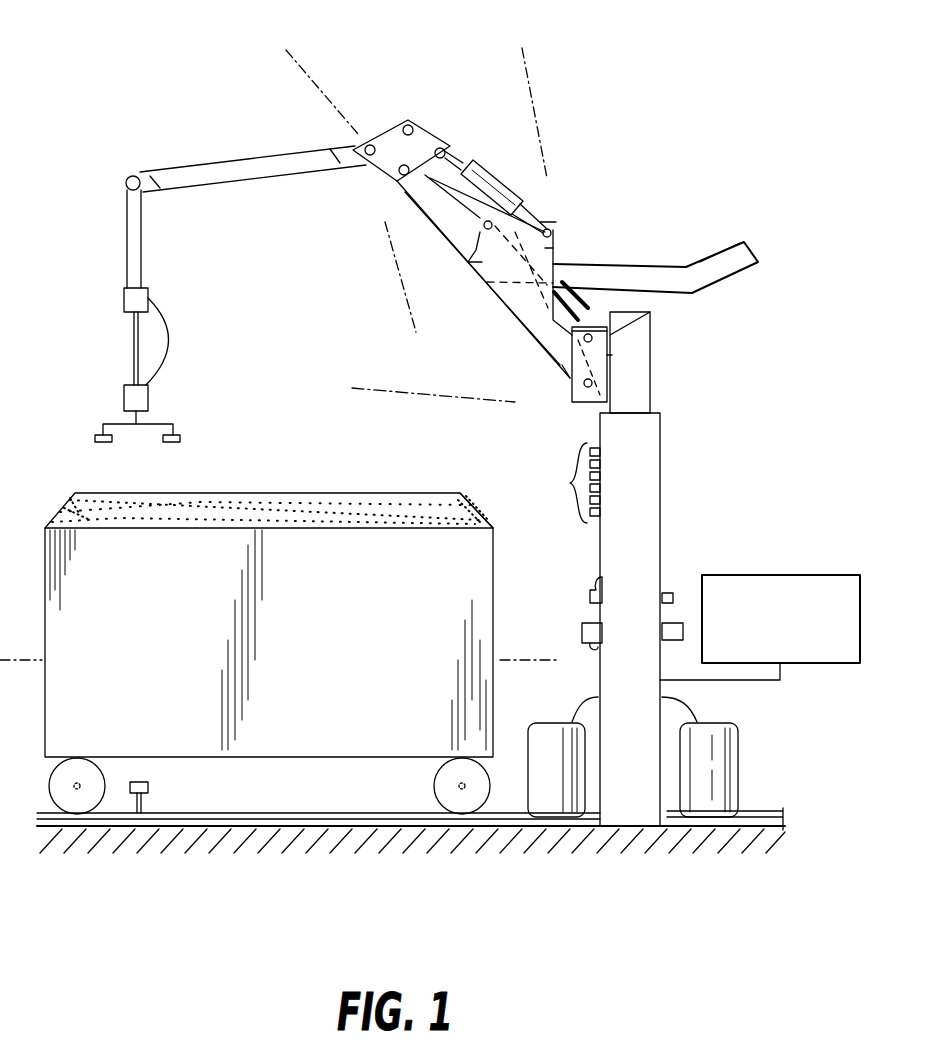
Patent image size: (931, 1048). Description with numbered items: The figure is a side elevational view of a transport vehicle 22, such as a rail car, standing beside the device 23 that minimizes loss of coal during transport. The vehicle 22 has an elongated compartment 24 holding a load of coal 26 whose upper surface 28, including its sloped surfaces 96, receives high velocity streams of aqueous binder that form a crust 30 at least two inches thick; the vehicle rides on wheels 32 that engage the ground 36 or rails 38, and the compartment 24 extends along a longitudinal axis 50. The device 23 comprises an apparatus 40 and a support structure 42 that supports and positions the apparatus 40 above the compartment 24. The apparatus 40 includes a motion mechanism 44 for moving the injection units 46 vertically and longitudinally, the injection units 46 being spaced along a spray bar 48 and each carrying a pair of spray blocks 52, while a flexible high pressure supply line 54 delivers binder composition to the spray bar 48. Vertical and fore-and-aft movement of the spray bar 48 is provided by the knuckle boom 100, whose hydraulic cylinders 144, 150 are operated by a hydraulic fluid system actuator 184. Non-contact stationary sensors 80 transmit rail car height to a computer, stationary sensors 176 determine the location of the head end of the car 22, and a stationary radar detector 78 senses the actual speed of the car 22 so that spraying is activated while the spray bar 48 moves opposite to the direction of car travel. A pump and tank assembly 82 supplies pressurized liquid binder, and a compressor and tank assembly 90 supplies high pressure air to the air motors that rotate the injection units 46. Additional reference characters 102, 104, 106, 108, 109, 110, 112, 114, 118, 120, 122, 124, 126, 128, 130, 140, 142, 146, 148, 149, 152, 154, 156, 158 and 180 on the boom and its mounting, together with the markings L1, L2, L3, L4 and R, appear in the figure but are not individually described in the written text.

The transport vehicle 22 is at (299, 662).
The device 23 is at (270, 126).
The elongated compartment 24 is at (342, 612).
The load of coal 26 is at (476, 504).
The upper surface 28 is at (269, 480).
The crust 30 is at (269, 480).
The wheels 32 is at (83, 807).
The ground 36 is at (263, 838).
The rails 38 is at (757, 815).
The apparatus 40 is at (594, 217).
The support structure 42 is at (438, 563).
The motion mechanism 44 is at (494, 166).
The injection units 46 is at (103, 448).
The spray bar 48 is at (120, 398).
The longitudinal axis 50 is at (512, 660).
The spray blocks 52 is at (98, 441).
The supply line 54 is at (169, 340).
The stationary radar detector 78 is at (662, 632).
The non-contact stationary sensors 80 is at (569, 483).
The pump and tank assembly 82 is at (714, 757).
The compressor and tank assembly 90 is at (801, 573).
The sloped surfaces 96 is at (406, 500).
The knuckle boom 100 is at (453, 315).
The lower link 102 is at (510, 305).
The pivot bracket 104 is at (559, 388).
The bracket pivot pins 106 is at (595, 405).
The upper arm 108 is at (259, 176).
The arm end 109 is at (345, 168).
The link 110 is at (410, 188).
The link 112 is at (395, 178).
The rod 114 is at (134, 345).
The pivot plate 118 is at (437, 137).
The arm joint 120 is at (170, 188).
The vertical mast 122 is at (119, 337).
The mast side 124 is at (127, 250).
The mast side 126 is at (127, 213).
The pivot 128 is at (126, 180).
The coupling block 130 is at (124, 300).
The support arm 140 is at (721, 258).
The column top section 142 is at (615, 371).
The cylinder 144 is at (577, 300).
The pivot pin 146 is at (472, 260).
The pivot joint 148 is at (612, 337).
The pin 149 is at (556, 234).
The cylinder 150 is at (538, 197).
The piston rod pin 152 is at (446, 153).
The piston rod 154 is at (458, 160).
The pin 156 is at (560, 249).
The cylinder pivot 158 is at (550, 224).
The stationary sensors 176 is at (603, 580).
The joint 180 is at (612, 358).
The hydraulic fluid system actuator 184 is at (543, 737).
The reference axis L1 is at (547, 113).
The reference axis L2 is at (433, 387).
The reference axis L3 is at (324, 92).
The reference axis L4 is at (407, 277).
The direction of travel R is at (66, 741).